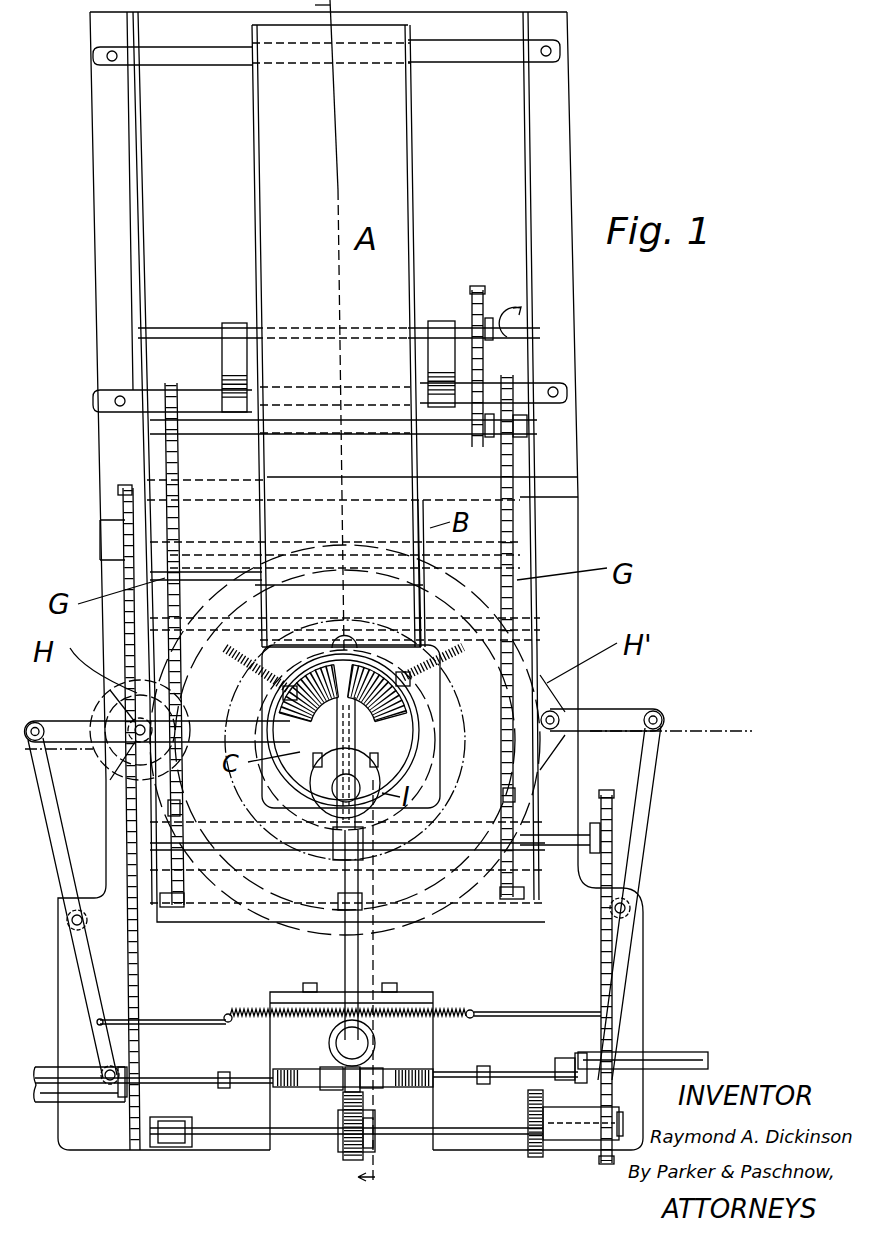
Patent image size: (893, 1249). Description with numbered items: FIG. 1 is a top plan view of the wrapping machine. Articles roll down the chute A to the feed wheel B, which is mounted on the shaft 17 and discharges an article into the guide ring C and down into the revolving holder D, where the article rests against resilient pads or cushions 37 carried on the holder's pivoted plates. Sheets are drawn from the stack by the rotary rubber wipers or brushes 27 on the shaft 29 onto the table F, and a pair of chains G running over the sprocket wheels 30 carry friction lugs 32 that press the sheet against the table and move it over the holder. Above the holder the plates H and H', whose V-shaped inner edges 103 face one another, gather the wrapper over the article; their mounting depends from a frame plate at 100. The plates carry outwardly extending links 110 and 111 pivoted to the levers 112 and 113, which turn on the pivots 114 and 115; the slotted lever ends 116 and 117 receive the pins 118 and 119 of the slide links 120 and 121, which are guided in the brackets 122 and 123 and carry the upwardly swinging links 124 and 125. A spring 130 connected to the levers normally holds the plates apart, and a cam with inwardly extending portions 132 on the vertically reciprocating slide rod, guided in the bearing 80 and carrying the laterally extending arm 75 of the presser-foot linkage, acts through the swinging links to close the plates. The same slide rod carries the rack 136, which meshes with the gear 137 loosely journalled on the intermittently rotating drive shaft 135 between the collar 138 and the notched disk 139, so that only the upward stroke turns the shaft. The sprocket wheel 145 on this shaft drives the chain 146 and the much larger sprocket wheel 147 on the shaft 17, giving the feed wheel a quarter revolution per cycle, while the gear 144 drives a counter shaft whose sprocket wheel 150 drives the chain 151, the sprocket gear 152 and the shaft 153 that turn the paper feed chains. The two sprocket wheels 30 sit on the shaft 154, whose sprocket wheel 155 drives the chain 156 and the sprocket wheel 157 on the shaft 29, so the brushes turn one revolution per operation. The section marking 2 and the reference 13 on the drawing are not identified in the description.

The pivot axis line 13 is at (398, 746).
The shaft 17 is at (200, 565).
The rotary wipers or brushes 27 is at (428, 352).
The shaft 29 is at (192, 330).
The sprocket wheels 30 is at (507, 380).
The friction lugs 32 is at (527, 795).
The pads or cushions 37 is at (380, 745).
The reciprocatory arm 75 is at (358, 946).
The bearing or lug 80 is at (375, 1048).
The depending member 100 is at (537, 610).
The V-shaped inner edges 103 is at (417, 755).
The link 110 is at (58, 721).
The link 111 is at (612, 710).
The lever 112 is at (65, 838).
The lever 113 is at (640, 810).
The pivot 114 is at (67, 920).
The pivot 115 is at (630, 906).
The slotted end 116 is at (115, 1092).
The slotted end 117 is at (580, 1072).
The pin 118 is at (105, 1071).
The pin 119 is at (592, 1055).
The slide link 120 is at (162, 1077).
The slide link 121 is at (677, 1063).
The bracket 122 is at (77, 1100).
The bracket 123 is at (653, 1052).
The swinging link 124 is at (256, 1087).
The swinging link 125 is at (453, 1082).
The spring 130 is at (440, 1003).
The inwardly extending portions 132 is at (403, 1067).
The drive shaft 135 is at (377, 1138).
The rack 136 is at (345, 1092).
The pinion or gear 137 is at (343, 1158).
The collar 138 is at (340, 1140).
The notched disk 139 is at (373, 1148).
The gear 144 is at (536, 1160).
The sprocket wheel 145 is at (138, 1148).
The sprocket chain 146 is at (142, 972).
The sprocket wheel 147 is at (118, 490).
The sprocket wheel 150 is at (606, 1166).
The sprocket chain 151 is at (600, 946).
The sprocket gear 152 is at (605, 790).
The shaft 153 is at (560, 835).
The shaft 154 is at (450, 440).
The sprocket wheel 155 is at (485, 446).
The sprocket chain 156 is at (468, 302).
The sprocket wheel 157 is at (478, 290).
The section line 2 is at (367, 994).